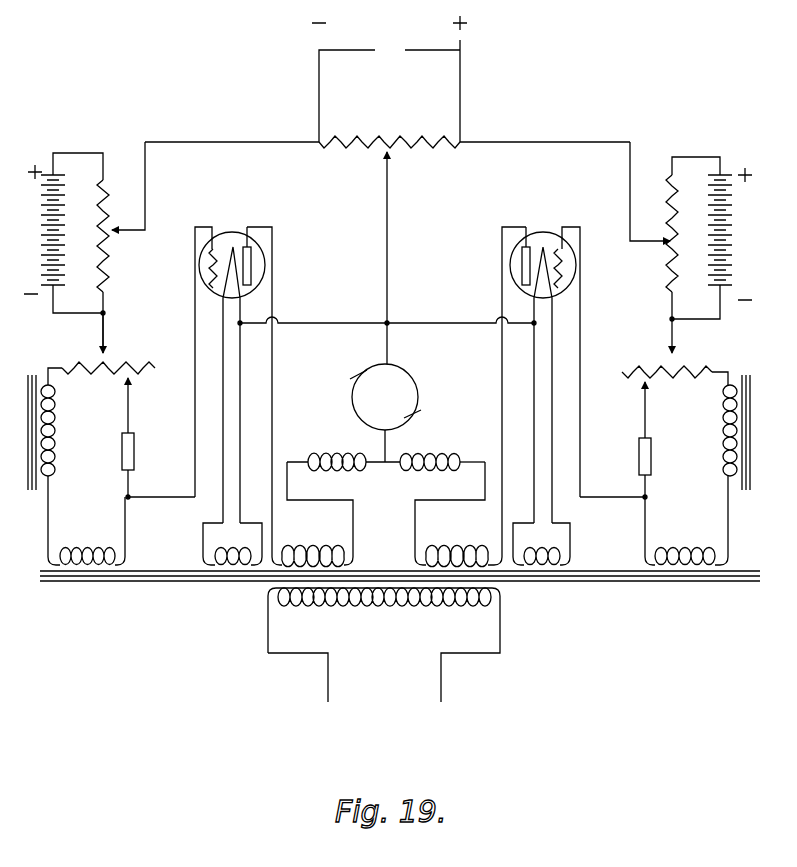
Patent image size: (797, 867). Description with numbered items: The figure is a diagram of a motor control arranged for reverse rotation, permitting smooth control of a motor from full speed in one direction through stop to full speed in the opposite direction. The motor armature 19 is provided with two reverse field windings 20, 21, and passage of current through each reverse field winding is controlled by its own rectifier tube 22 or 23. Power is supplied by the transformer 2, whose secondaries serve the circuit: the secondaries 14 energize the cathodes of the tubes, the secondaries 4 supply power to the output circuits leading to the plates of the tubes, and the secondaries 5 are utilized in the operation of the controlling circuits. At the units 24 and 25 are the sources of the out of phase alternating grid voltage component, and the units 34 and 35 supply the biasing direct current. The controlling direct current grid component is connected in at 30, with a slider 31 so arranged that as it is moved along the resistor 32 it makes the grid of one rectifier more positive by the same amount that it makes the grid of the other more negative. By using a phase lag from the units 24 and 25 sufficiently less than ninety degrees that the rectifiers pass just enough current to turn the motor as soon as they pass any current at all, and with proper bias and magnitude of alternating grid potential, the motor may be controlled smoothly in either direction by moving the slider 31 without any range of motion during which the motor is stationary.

The transformer 2 is at (410, 607).
The secondary 4 is at (297, 552).
The secondary 5 is at (66, 551).
The secondary 14 is at (386, 544).
The motor armature 19 is at (411, 378).
The reverse field winding 20 is at (326, 452).
The reverse field winding 21 is at (449, 452).
The rectifier tube 22 is at (234, 232).
The rectifier tube 23 is at (546, 232).
The source of out of phase alternating grid voltage component 24 is at (111, 431).
The source of out of phase alternating grid voltage component 25 is at (665, 433).
The controlling direct current grid component connection 30 is at (389, 79).
The slider 31 is at (391, 153).
The resistor 32 is at (393, 136).
The biasing direct current unit 34 is at (66, 253).
The biasing direct current unit 35 is at (709, 255).